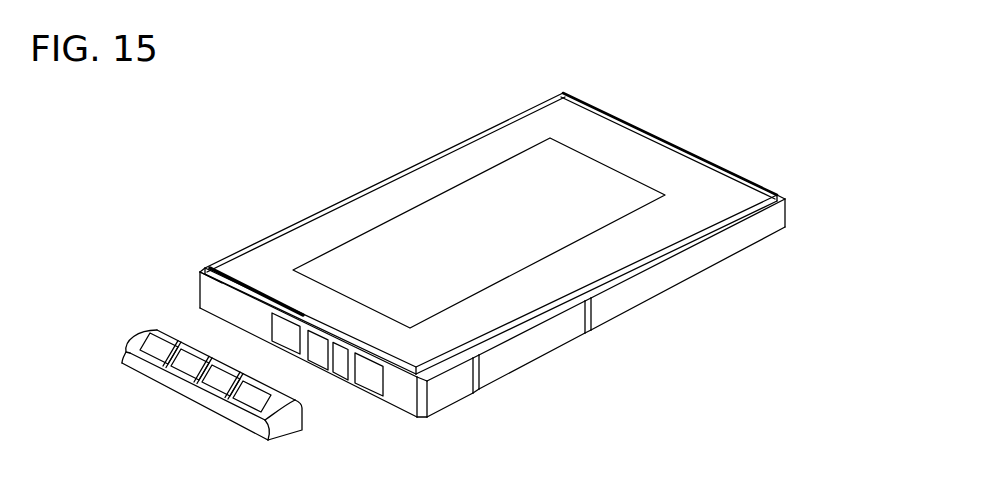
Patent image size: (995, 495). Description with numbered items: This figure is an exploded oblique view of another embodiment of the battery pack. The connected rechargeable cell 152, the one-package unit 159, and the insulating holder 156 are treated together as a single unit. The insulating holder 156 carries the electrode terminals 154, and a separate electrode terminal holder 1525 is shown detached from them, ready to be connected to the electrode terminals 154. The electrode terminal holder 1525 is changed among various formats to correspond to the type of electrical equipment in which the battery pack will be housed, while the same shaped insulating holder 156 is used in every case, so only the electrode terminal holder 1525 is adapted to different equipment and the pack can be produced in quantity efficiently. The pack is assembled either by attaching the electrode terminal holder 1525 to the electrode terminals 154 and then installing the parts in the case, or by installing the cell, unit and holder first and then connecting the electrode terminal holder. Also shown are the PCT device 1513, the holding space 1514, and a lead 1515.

The rechargeable cell 152 is at (358, 208).
The electrode terminals 154 is at (283, 328).
The insulating holder 156 is at (402, 403).
The one-package unit 159 is at (262, 297).
The PCT device 1513 is at (525, 352).
The holding space 1514 is at (222, 263).
The lead 1515 is at (680, 268).
The electrode terminal holder 1525 is at (123, 326).